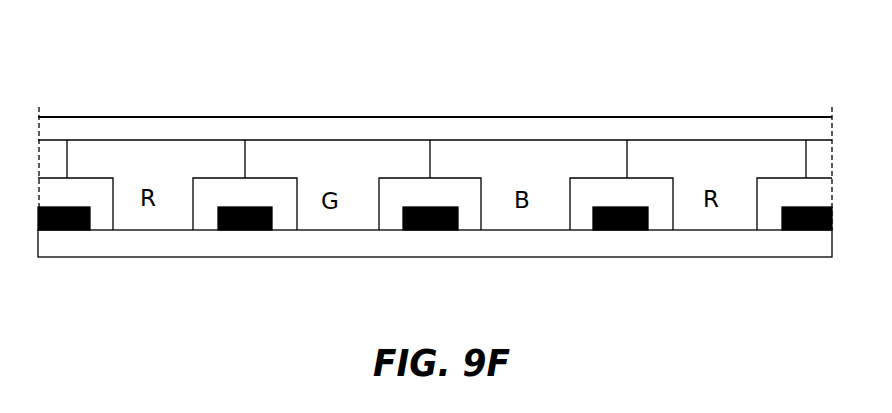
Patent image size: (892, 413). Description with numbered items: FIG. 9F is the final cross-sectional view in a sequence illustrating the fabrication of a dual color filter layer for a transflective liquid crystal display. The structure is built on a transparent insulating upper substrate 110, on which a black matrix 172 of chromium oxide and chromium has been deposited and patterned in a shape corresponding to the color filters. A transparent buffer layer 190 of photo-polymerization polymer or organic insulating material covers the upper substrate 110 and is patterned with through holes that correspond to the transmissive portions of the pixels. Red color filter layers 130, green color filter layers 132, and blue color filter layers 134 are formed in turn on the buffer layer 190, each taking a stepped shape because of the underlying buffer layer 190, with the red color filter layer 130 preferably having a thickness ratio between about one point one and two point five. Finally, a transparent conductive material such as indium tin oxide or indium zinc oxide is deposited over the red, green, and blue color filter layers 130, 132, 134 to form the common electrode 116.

The upper substrate 110 is at (560, 243).
The common electrode 116 is at (129, 113).
The red color filter layer 130 is at (187, 150).
The green color filter layer 132 is at (322, 150).
The blue color filter layer 134 is at (568, 148).
The buffer layer 190 is at (453, 180).
The black matrix 172 is at (427, 231).